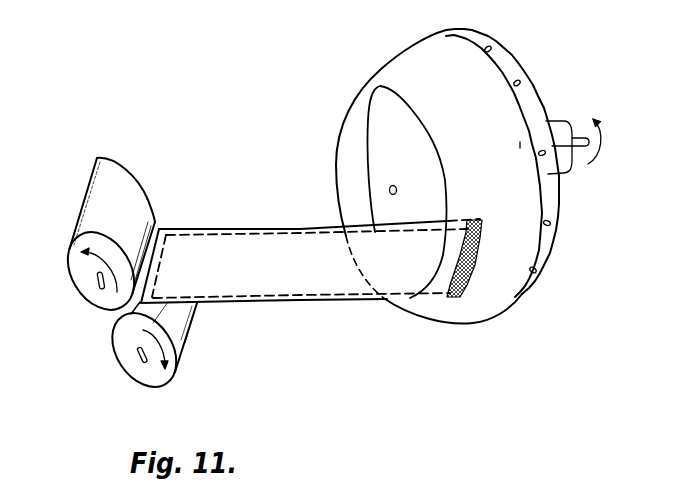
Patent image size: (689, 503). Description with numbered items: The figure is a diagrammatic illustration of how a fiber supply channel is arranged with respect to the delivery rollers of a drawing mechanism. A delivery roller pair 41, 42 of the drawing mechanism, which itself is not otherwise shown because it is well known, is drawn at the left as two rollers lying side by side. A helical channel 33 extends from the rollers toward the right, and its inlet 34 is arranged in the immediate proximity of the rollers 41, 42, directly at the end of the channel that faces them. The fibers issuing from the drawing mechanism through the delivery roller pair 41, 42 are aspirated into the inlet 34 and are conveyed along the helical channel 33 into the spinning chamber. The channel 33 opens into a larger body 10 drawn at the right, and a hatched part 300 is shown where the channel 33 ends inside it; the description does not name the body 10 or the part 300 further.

The housing 10 is at (515, 71).
The helical channel 33 is at (311, 240).
The inlet 34 is at (161, 229).
The delivery roller 41 is at (91, 201).
The delivery roller 42 is at (187, 333).
The abrasive pad 300 is at (477, 268).